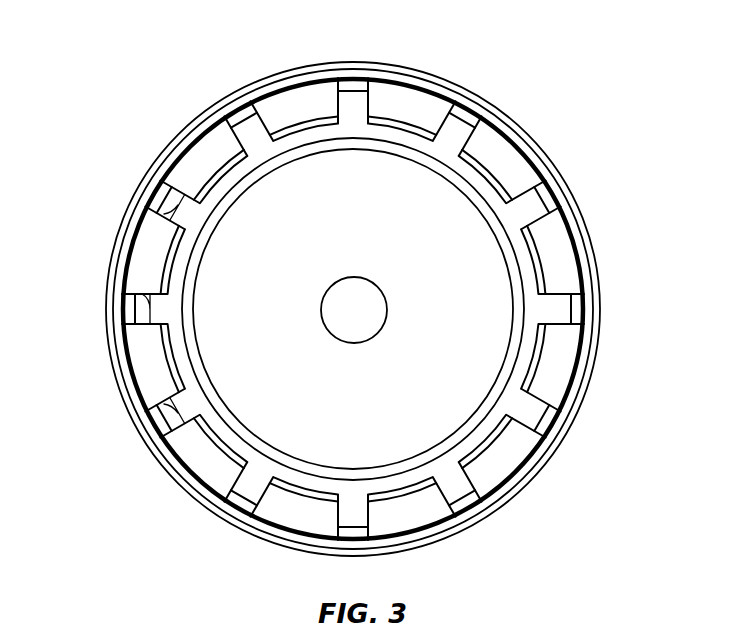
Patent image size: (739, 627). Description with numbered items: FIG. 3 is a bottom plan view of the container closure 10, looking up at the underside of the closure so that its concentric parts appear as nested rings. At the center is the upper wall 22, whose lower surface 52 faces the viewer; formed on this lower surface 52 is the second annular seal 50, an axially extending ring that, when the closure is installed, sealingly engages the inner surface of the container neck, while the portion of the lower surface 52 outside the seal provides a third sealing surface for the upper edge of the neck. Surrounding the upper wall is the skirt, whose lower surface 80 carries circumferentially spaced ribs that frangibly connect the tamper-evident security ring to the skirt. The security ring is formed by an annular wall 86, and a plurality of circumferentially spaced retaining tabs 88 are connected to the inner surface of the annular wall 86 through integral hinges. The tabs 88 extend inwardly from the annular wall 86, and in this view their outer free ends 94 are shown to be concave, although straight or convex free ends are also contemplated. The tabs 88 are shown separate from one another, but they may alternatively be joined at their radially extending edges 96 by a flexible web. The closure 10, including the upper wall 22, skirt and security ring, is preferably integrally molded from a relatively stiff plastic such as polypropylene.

The closure 10 is at (570, 119).
The upper wall 22 is at (425, 193).
The second annular seal 50 is at (517, 285).
The lower surface 52 is at (368, 240).
The lower surface 80 is at (583, 222).
The annular wall 86 is at (550, 197).
The retaining tabs 88 is at (303, 102).
The outer free end 94 is at (537, 240).
The radially extending edges 96 is at (243, 115).